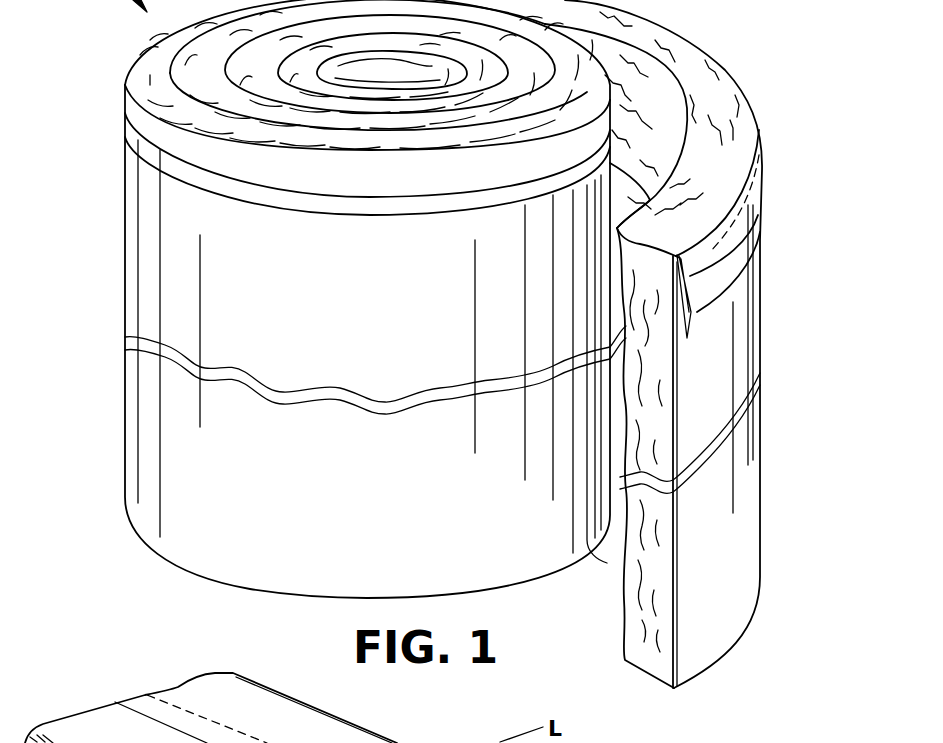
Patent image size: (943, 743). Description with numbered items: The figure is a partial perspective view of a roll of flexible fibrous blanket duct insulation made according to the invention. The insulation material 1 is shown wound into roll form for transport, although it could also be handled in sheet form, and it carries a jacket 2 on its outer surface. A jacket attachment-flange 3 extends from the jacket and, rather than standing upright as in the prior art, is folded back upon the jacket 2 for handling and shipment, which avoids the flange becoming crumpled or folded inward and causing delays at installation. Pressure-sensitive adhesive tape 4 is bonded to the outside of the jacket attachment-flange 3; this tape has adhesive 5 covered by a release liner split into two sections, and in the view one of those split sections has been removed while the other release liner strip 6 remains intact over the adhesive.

The insulation material 1 is at (626, 555).
The jacket 2 is at (235, 543).
The jacket attachment-flange 3 is at (743, 203).
The pressure-sensitive adhesive tape 4 is at (740, 265).
The adhesive 5 is at (692, 308).
The release liner strip 6 is at (723, 293).